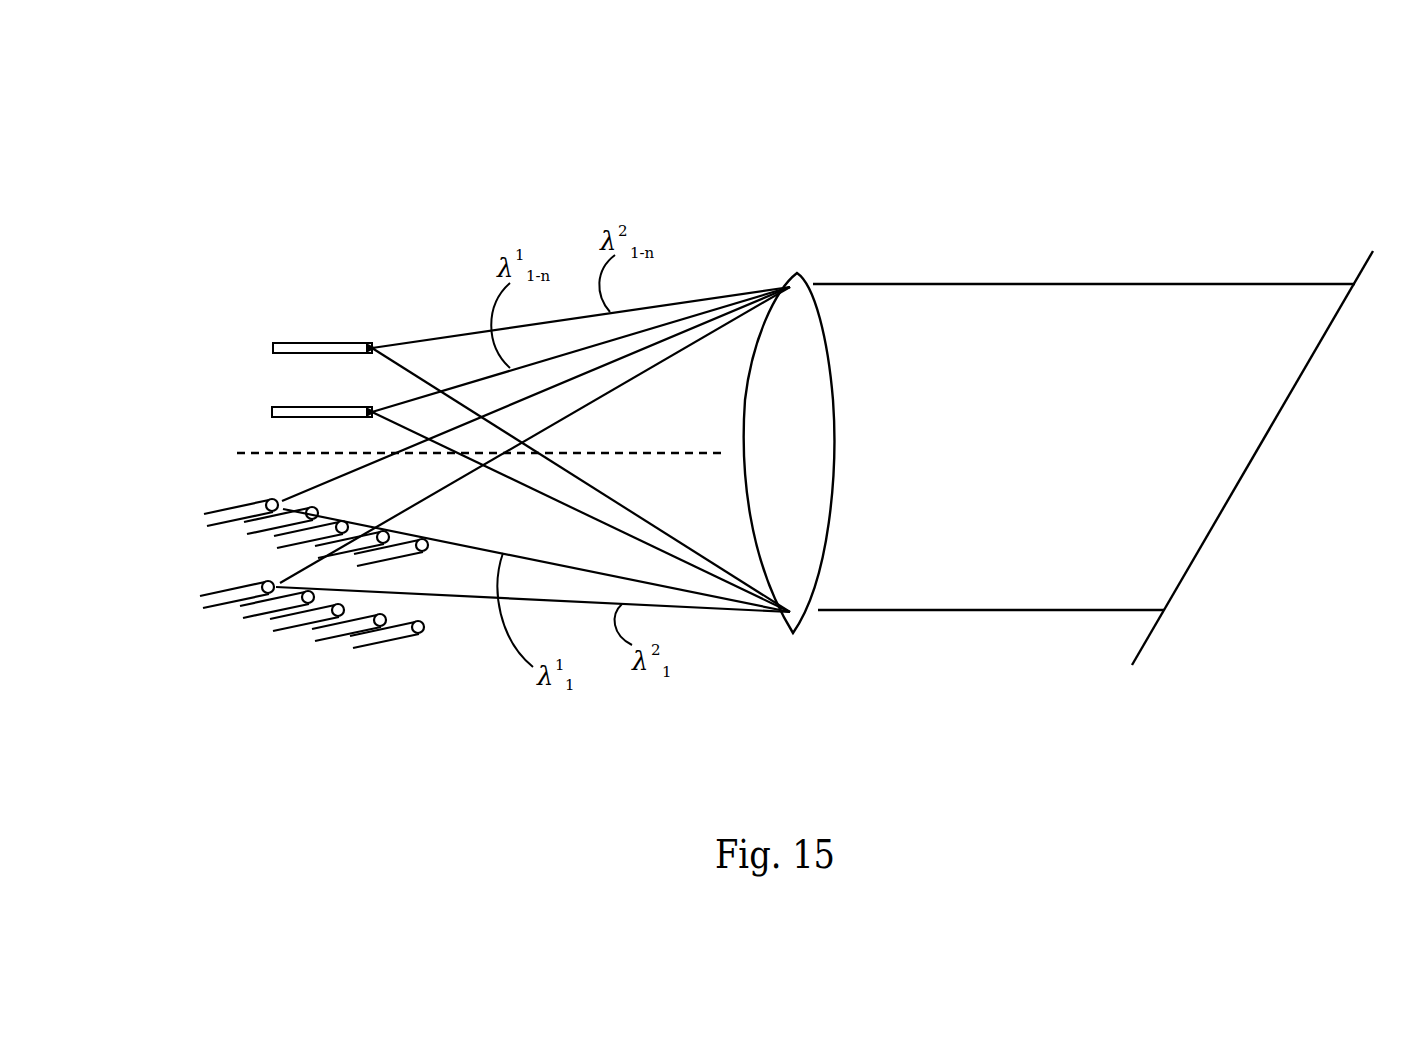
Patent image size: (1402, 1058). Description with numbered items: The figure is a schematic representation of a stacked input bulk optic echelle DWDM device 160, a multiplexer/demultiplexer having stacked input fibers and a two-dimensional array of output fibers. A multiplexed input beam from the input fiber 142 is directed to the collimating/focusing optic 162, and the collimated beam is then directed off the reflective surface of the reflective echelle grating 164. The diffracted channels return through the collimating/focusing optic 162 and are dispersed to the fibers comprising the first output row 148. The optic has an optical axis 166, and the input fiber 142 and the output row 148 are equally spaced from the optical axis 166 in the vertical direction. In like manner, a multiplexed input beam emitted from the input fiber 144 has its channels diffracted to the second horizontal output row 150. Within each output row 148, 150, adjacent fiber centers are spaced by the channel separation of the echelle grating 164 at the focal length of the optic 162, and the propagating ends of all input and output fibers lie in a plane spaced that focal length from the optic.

The input fiber 142 is at (293, 407).
The input fiber 144 is at (300, 345).
The first output row 148 is at (225, 545).
The second horizontal output row 150 is at (255, 647).
The stacked input bulk optic echelle DWDM device 160 is at (913, 150).
The collimating/focusing optic 162 is at (811, 300).
The reflective echelle grating 164 is at (1268, 427).
The optical axis 166 is at (612, 452).